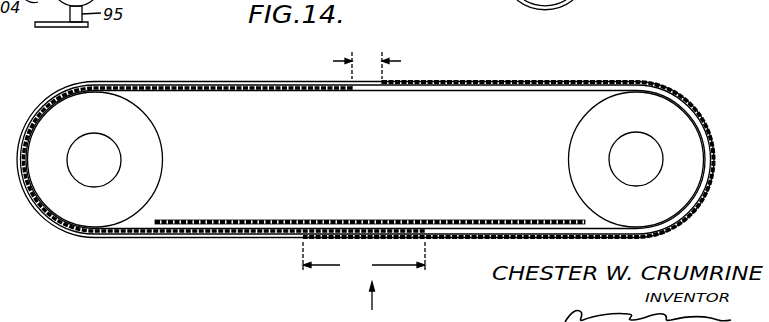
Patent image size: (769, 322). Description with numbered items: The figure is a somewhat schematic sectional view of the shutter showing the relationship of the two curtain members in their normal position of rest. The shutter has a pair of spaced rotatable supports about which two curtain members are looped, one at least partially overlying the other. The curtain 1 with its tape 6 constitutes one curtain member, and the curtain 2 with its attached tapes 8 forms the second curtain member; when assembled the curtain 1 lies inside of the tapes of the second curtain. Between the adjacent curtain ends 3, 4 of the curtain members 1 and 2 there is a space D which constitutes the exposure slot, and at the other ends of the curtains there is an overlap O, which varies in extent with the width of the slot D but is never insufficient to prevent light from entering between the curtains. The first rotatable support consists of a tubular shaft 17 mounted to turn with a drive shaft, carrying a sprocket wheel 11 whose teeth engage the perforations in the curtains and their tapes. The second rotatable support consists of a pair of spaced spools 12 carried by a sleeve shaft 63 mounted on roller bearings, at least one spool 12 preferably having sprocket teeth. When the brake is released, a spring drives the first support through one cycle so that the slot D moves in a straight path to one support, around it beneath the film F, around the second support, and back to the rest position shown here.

The curtain 1 is at (268, 92).
The curtain 2 is at (488, 80).
The end of inner ply 3 is at (353, 91).
The end of outer ply 4 is at (385, 80).
The tape 6 is at (549, 91).
The tapes 8 is at (201, 81).
The sprocket wheel 11 is at (151, 175).
The spool 12 is at (575, 182).
The tubular shaft 17 is at (95, 133).
The sleeve shaft 63 is at (630, 132).
The film F is at (288, 220).
The space D is at (367, 65).
The overlap O is at (364, 259).